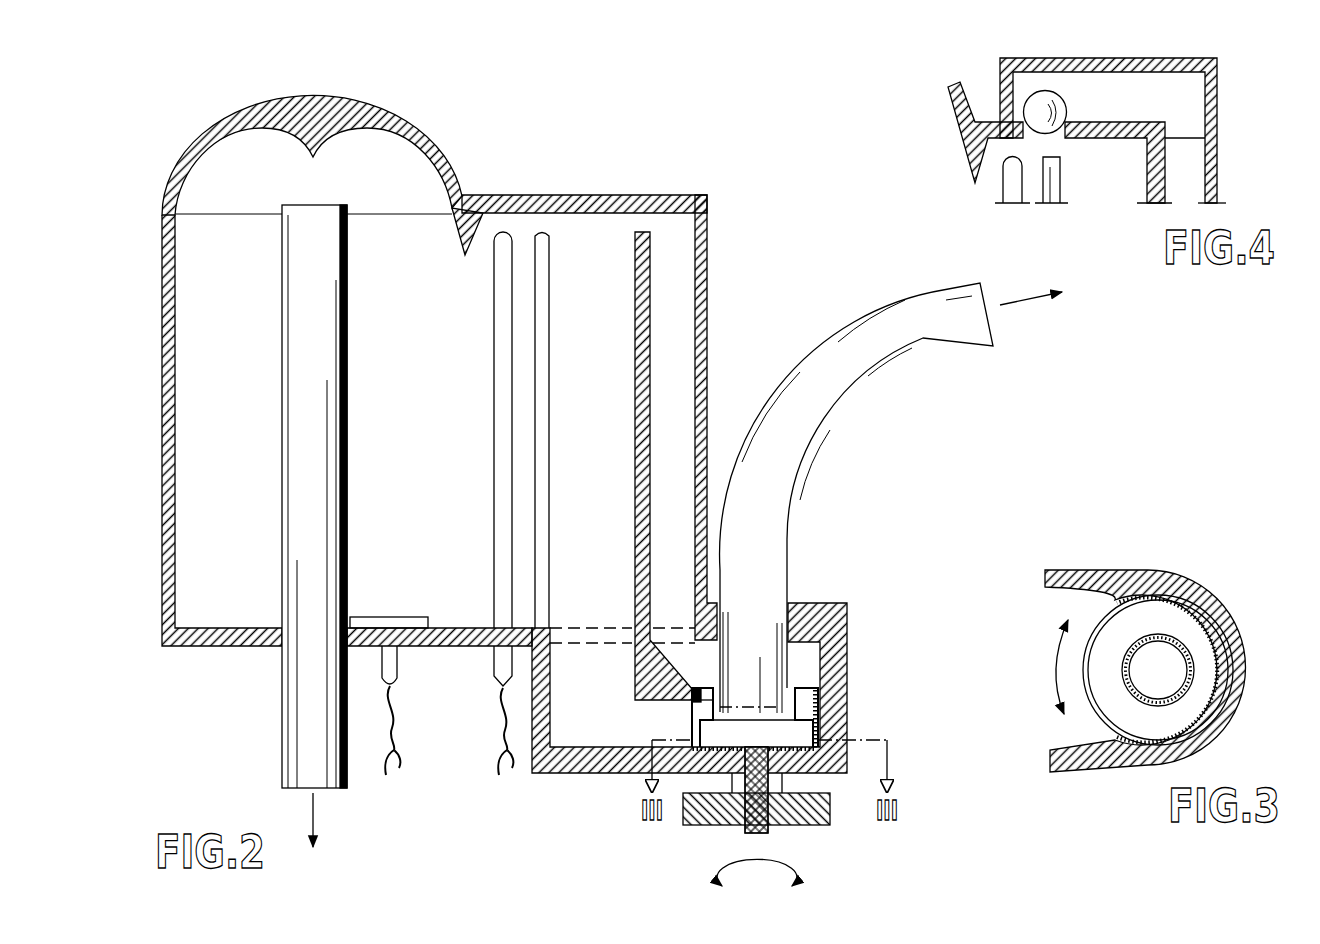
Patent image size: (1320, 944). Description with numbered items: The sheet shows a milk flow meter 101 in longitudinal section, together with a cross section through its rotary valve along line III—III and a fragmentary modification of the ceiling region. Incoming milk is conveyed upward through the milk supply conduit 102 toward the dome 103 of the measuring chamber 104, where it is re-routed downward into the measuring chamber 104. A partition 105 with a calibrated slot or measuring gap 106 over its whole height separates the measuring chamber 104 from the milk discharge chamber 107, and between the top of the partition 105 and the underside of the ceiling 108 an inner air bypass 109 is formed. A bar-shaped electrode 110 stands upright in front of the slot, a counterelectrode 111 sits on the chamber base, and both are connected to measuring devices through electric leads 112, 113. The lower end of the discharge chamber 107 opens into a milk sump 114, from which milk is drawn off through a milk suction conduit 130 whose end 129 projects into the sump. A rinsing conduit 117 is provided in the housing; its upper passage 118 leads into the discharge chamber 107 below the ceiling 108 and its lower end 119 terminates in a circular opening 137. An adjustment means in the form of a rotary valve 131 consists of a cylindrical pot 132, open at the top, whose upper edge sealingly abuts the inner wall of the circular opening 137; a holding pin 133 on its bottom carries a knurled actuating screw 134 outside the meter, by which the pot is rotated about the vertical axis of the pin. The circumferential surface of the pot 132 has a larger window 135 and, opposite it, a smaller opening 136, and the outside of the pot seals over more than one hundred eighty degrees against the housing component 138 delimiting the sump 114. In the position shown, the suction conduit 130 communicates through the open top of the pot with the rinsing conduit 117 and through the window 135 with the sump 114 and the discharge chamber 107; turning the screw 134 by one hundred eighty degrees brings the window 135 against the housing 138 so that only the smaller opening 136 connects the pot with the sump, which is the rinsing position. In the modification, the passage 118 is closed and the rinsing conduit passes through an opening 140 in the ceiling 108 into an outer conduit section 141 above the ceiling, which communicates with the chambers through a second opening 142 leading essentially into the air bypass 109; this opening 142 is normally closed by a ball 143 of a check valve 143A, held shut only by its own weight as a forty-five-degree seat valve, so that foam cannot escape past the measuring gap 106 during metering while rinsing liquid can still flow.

In FIG. 2, the milk flow meter 101 is at (444, 132).
In FIG. 2, the milk supply conduit 102 is at (300, 722).
In FIG. 2, the dome 103 is at (300, 130).
In FIG. 4, the dome 103 is at (945, 103).
In FIG. 2, the measuring chamber 104 is at (215, 322).
In FIG. 2, the partition 105 is at (560, 333).
In FIG. 2, the calibrated slot (measuring gap) 106 is at (545, 380).
In FIG. 4, the calibrated slot (measuring gap) 106 is at (1052, 198).
In FIG. 2, the milk discharge chamber 107 is at (608, 405).
In FIG. 2, the ceiling 108 is at (607, 200).
In FIG. 4, the ceiling 108 is at (1122, 140).
In FIG. 2, the inner air bypass 109 is at (541, 226).
In FIG. 4, the inner air bypass 109 is at (1052, 148).
In FIG. 2, the bar-shaped electrode 110 is at (496, 350).
In FIG. 4, the bar-shaped electrode 110 is at (1012, 200).
In FIG. 2, the counterelectrode 111 is at (410, 617).
In FIG. 2, the electric lead 112 is at (482, 749).
In FIG. 2, the electric lead 113 is at (381, 748).
In FIG. 2, the milk sump 114 is at (585, 742).
In FIG. 2, the rinsing conduit 117 is at (677, 432).
In FIG. 2, the passage (upper end of rinsing conduit) 118 is at (650, 228).
In FIG. 2, the lower end of rinsing conduit 119 is at (800, 657).
In FIG. 2, the end of milk suction conduit 129 is at (752, 705).
In FIG. 2, the milk suction conduit 130 is at (928, 333).
In FIG. 2, the rotary valve 131 is at (818, 745).
In FIG. 2, the cylindrical pot 132 is at (795, 690).
In FIG. 2, the holding pin 133 is at (745, 820).
In FIG. 2, the knurled actuating screw 134 is at (683, 812).
In FIG. 2, the window 135 is at (692, 722).
In FIG. 3, the window 135 is at (1088, 672).
In FIG. 2, the smaller opening 136 is at (820, 738).
In FIG. 3, the smaller opening 136 is at (1250, 660).
In FIG. 2, the circular opening 137 is at (730, 660).
In FIG. 3, the housing component 138 is at (1218, 597).
In FIG. 4, the opening 140 is at (1178, 130).
In FIG. 4, the outer conduit section 141 is at (1163, 102).
In FIG. 4, the second opening 142 is at (1035, 138).
In FIG. 4, the ball 143 is at (960, 135).
In FIG. 4, the check valve 143A is at (1060, 84).